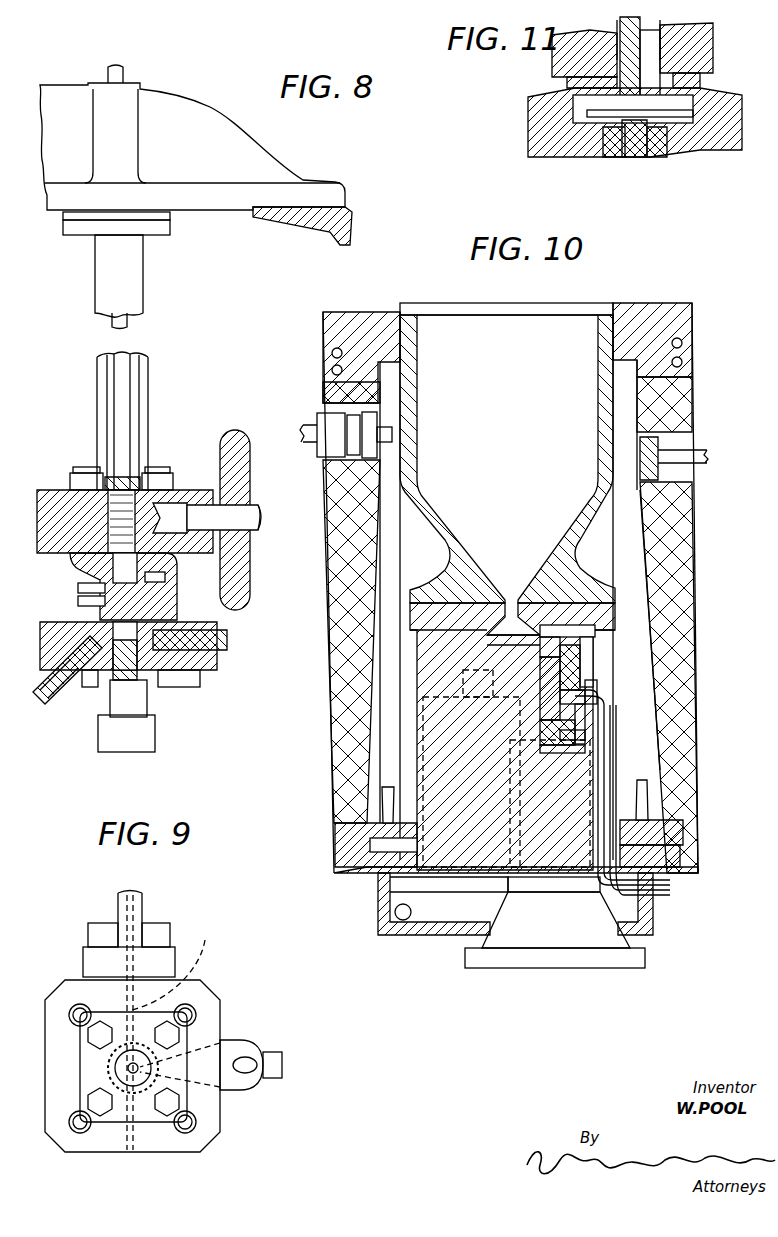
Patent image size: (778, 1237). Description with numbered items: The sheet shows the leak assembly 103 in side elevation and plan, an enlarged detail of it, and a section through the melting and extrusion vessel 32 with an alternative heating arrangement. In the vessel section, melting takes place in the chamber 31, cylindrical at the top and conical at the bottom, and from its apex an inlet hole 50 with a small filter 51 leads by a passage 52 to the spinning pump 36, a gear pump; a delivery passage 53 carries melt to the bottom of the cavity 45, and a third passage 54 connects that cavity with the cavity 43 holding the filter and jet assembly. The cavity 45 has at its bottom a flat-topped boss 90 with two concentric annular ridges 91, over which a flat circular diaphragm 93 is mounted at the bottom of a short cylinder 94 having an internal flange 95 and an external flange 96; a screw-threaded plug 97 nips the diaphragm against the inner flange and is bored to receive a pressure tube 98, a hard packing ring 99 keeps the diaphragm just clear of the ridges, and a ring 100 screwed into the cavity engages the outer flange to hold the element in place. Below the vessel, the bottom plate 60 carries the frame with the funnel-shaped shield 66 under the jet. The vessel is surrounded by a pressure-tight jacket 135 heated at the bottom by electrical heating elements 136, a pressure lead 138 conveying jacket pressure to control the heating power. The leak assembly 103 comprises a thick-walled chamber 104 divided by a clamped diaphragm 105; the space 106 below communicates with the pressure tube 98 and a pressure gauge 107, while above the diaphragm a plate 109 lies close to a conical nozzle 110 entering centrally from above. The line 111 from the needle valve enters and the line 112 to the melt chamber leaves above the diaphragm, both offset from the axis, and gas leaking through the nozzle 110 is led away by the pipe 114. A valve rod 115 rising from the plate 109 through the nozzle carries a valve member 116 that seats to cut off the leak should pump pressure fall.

In FIG. 10, the melt chamber 31 is at (567, 500).
In FIG. 10, the cylindrical steel vessel 32 is at (553, 567).
In FIG. 10, the spinning pump 36 is at (427, 685).
In FIG. 10, the second cylindrical cavity 43 is at (657, 843).
In FIG. 10, the third cylindrical cavity 45 is at (567, 638).
In FIG. 10, the inlet hole 50 is at (500, 645).
In FIG. 10, the small filter 51 is at (487, 637).
In FIG. 10, the passage 52 is at (503, 657).
In FIG. 10, the delivery passage 53 is at (600, 612).
In FIG. 10, the third passage 54 is at (667, 827).
In FIG. 10, the bottom plate 60 is at (343, 868).
In FIG. 10, the funnel-shaped shield 66 is at (541, 937).
In FIG. 10, the boss 90 is at (553, 720).
In FIG. 10, the concentric annular ridges 91 is at (583, 703).
In FIG. 10, the flat circular diaphragm 93 is at (553, 672).
In FIG. 10, the short cylinder 94 is at (583, 663).
In FIG. 10, the internal flange 95 is at (563, 740).
In FIG. 10, the external flange 96 is at (587, 753).
In FIG. 10, the screw-threaded plug 97 is at (567, 690).
In FIG. 8, the pressure tube 98 is at (58, 685).
In FIG. 10, the pressure tube 98 is at (603, 797).
In FIG. 10, the hard packing ring 99 is at (547, 747).
In FIG. 10, the ring 100 is at (602, 645).
In FIG. 8, the leak assembly 103 is at (175, 495).
In FIG. 9, the leak assembly 103 is at (55, 1010).
In FIG. 8, the thick-walled chamber 104 is at (70, 570).
In FIG. 11, the thick-walled chamber 104 is at (578, 115).
In FIG. 8, the diaphragm 105 is at (85, 588).
In FIG. 11, the diaphragm 105 is at (555, 135).
In FIG. 8, the space below the diaphragm 106 is at (88, 602).
In FIG. 11, the space below the diaphragm 106 is at (690, 150).
In FIG. 8, the pressure gauge 107 is at (135, 702).
In FIG. 8, the plate 109 is at (165, 576).
In FIG. 11, the plate 109 is at (648, 152).
In FIG. 8, the conical nozzle 110 is at (85, 502).
In FIG. 11, the conical nozzle 110 is at (592, 106).
In FIG. 9, the line from the needle valve 111 is at (142, 905).
In FIG. 8, the line to the melt chamber 112 is at (255, 503).
In FIG. 9, the line to the melt chamber 112 is at (270, 1055).
In FIG. 11, the line to the melt chamber 112 is at (663, 42).
In FIG. 8, the pipe 114 is at (124, 358).
In FIG. 9, the pipe 114 is at (130, 1068).
In FIG. 8, the valve rod 115 is at (97, 490).
In FIG. 11, the valve rod 115 is at (585, 90).
In FIG. 8, the valve member 116 is at (148, 478).
In FIG. 11, the valve member 116 is at (648, 60).
In FIG. 10, the pressure-tight jacket 135 is at (642, 556).
In FIG. 10, the electrical heating elements 136 is at (683, 863).
In FIG. 10, the pressure lead 138 is at (698, 463).